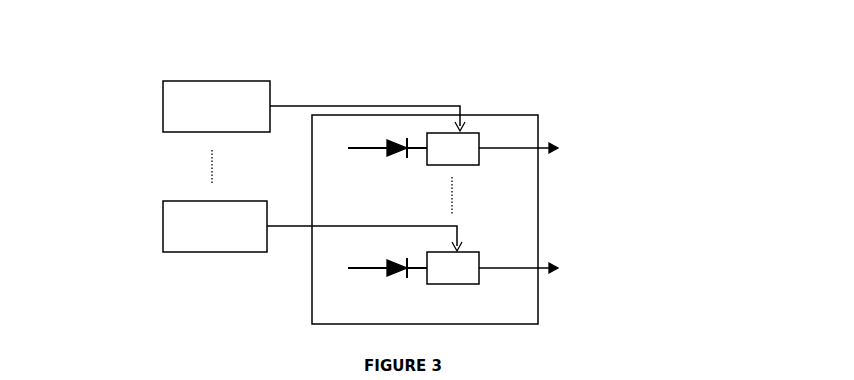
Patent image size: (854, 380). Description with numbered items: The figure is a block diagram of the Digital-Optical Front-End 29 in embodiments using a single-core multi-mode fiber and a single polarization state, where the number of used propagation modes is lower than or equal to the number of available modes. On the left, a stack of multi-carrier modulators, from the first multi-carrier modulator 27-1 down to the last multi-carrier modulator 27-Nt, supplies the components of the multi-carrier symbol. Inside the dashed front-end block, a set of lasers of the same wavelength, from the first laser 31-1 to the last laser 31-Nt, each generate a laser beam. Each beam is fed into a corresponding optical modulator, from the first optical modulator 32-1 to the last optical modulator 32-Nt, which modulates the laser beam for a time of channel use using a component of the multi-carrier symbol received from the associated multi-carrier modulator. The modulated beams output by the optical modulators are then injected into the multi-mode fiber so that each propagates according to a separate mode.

The Digital-Optical Front-End 29 is at (301, 167).
The multi-carrier modulator 27-1 is at (240, 80).
The multi-carrier modulator 27-Nt is at (239, 200).
The laser 31-1 is at (391, 155).
The laser 31-Nt is at (391, 275).
The optical modulator 32-1 is at (470, 133).
The optical modulator 32-Nt is at (472, 252).